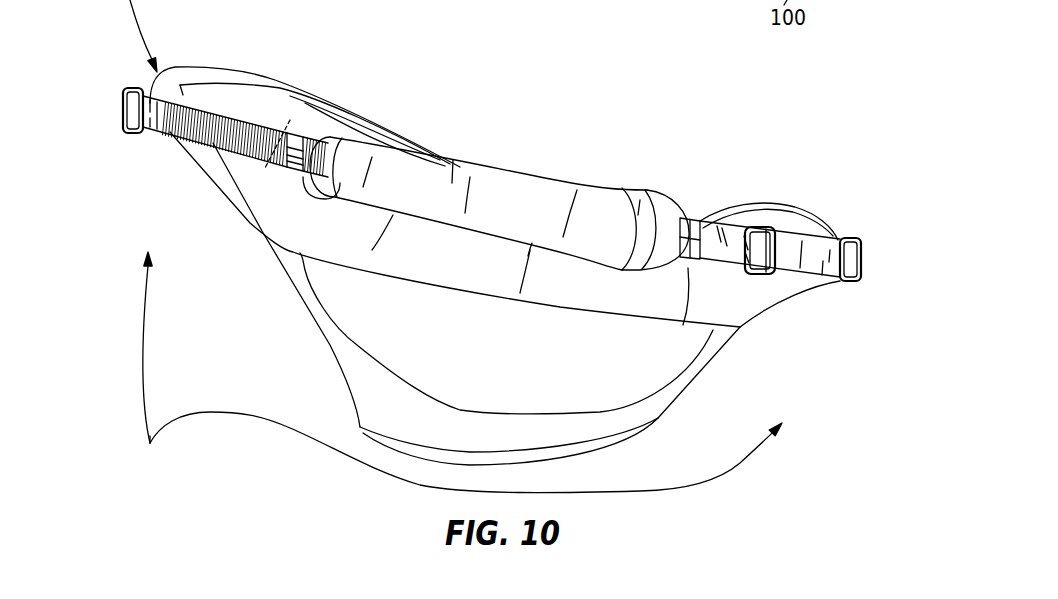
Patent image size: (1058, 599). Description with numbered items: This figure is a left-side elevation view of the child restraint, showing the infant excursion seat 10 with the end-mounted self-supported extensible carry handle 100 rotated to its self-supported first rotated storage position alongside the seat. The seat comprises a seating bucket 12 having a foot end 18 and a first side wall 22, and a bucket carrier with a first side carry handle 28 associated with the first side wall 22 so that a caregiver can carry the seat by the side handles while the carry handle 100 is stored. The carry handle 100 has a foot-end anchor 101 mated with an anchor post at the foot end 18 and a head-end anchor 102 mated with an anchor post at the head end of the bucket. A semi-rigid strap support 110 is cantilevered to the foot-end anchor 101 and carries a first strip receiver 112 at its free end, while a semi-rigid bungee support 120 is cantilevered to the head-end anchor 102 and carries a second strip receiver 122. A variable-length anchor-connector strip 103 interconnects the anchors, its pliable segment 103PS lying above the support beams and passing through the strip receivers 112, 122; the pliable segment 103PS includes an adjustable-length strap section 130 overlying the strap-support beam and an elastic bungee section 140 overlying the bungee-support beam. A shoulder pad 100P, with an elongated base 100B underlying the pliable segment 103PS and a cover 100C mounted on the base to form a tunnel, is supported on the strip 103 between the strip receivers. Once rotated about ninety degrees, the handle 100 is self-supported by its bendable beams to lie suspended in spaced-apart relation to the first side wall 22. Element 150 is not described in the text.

The infant excursion seat 10 is at (283, 288).
The seating bucket 12 is at (657, 368).
The foot end 18 is at (837, 205).
The first side wall 22 is at (430, 338).
The first side carry handle 28 is at (419, 132).
The end-mounted self-supported extensible carry handle 100 is at (608, 160).
The elongated base 100B is at (660, 207).
The cover 100C is at (455, 177).
The shoulder pad 100P is at (497, 183).
The foot-end anchor 101 is at (863, 235).
The head-end anchor 102 is at (128, 83).
The variable-length anchor-connector strip 103 is at (253, 117).
The pliable segment 103PS is at (150, 454).
The semi-rigid strap support 110 is at (696, 209).
The first strip receiver 112 is at (683, 253).
The semi-rigid bungee support 120 is at (297, 121).
The second strip receiver 122 is at (292, 171).
The adjustable-length strap section 130 is at (725, 280).
The elastic bungee section 140 is at (235, 162).
The buckle 150 is at (775, 215).